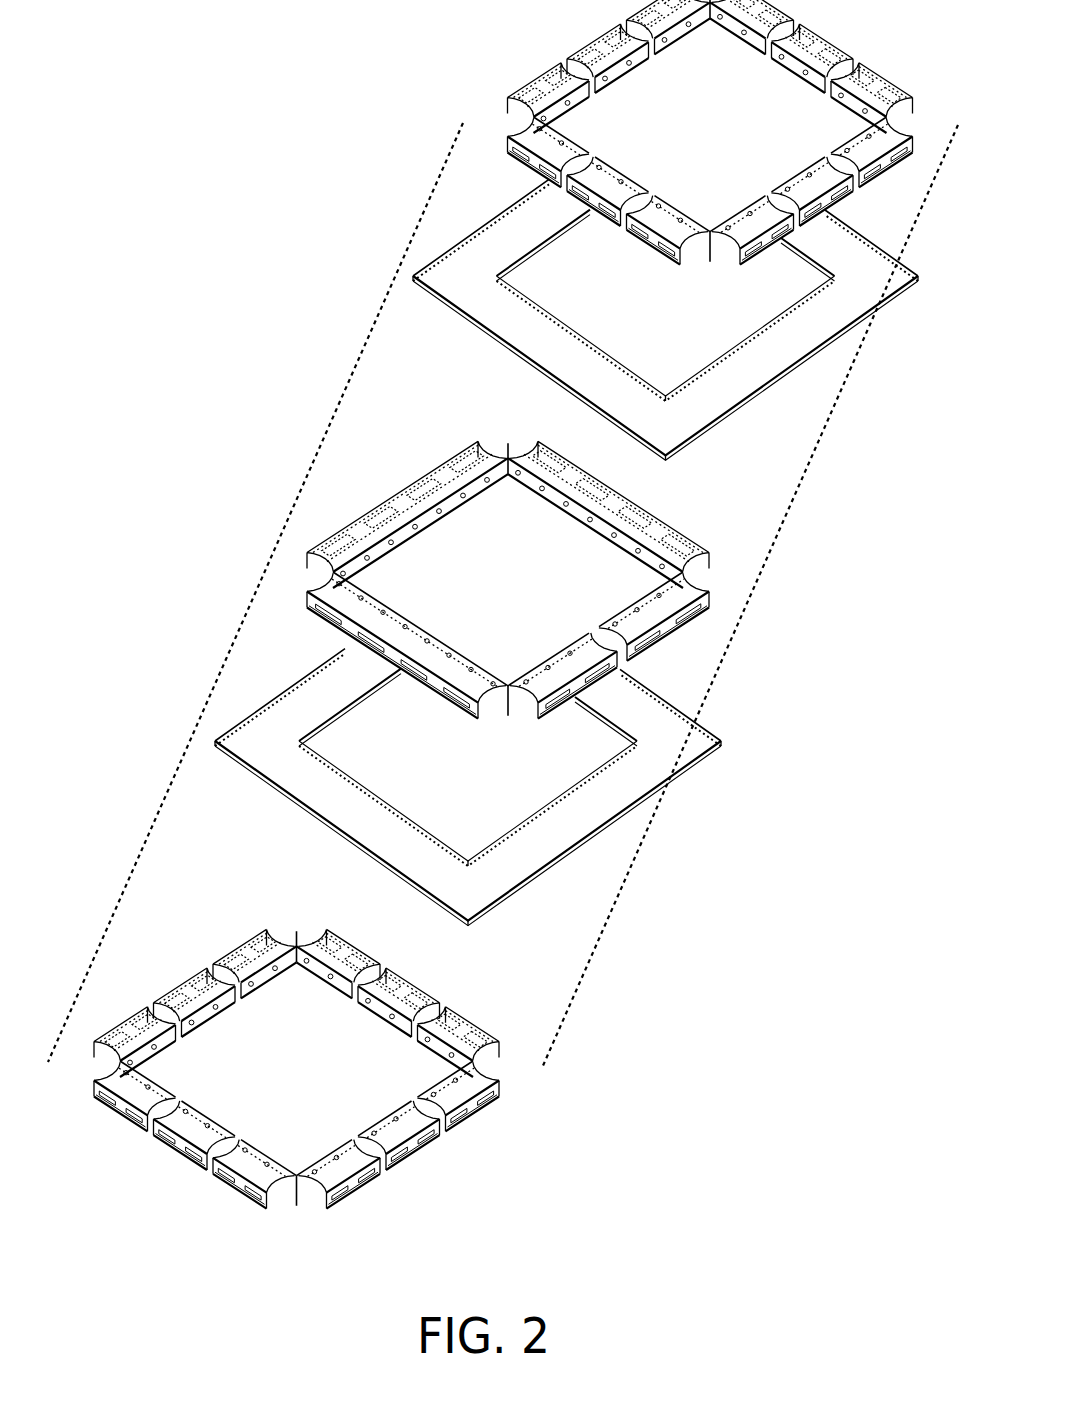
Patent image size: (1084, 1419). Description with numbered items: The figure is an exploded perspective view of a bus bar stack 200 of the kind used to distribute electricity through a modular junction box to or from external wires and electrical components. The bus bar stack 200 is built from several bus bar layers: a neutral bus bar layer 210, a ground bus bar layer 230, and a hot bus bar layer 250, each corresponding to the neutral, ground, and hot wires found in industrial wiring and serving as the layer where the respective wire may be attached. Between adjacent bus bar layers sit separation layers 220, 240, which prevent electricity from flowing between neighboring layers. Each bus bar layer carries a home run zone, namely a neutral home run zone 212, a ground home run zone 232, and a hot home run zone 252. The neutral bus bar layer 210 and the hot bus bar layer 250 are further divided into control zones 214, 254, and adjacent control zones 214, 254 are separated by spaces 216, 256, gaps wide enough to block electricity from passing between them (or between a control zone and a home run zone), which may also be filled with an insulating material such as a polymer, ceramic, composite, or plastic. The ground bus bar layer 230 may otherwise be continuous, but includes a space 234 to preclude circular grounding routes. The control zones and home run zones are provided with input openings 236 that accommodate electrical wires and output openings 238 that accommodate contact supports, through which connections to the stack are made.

The bus bar stack 200 is at (503, 639).
The neutral bus bar layer 210 is at (380, 1103).
The neutral home run zone 212 is at (415, 1152).
The control zones 214 is at (213, 1167).
The spaces 216 is at (237, 1140).
The separation layer 220 is at (682, 830).
The ground bus bar layer 230 is at (518, 556).
The ground home run zone 232 is at (413, 511).
The space 234 is at (647, 640).
The input openings 236 is at (702, 613).
The output openings 238 is at (653, 555).
The separation layer 240 is at (383, 238).
The hot bus bar layer 250 is at (602, 153).
The hot home run zone 252 is at (590, 48).
The control zones 254 is at (654, 201).
The spaces 256 is at (598, 153).